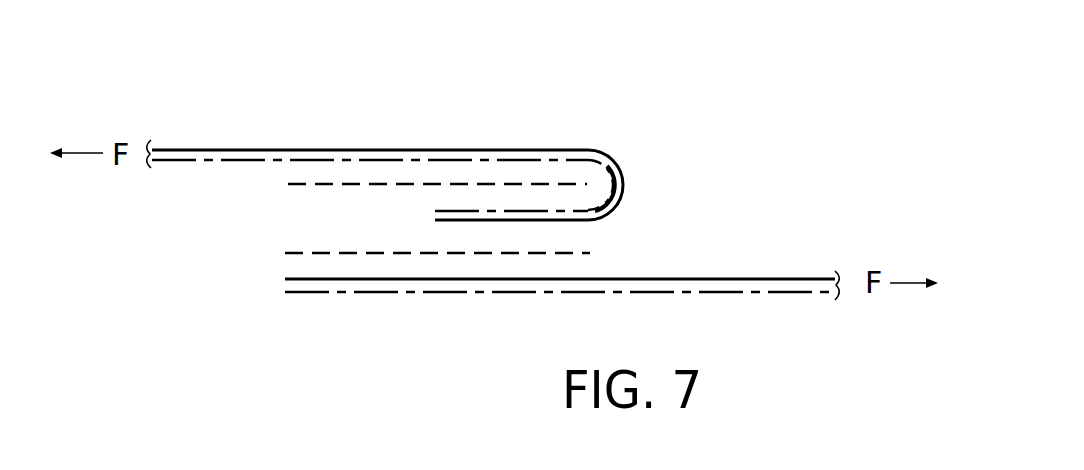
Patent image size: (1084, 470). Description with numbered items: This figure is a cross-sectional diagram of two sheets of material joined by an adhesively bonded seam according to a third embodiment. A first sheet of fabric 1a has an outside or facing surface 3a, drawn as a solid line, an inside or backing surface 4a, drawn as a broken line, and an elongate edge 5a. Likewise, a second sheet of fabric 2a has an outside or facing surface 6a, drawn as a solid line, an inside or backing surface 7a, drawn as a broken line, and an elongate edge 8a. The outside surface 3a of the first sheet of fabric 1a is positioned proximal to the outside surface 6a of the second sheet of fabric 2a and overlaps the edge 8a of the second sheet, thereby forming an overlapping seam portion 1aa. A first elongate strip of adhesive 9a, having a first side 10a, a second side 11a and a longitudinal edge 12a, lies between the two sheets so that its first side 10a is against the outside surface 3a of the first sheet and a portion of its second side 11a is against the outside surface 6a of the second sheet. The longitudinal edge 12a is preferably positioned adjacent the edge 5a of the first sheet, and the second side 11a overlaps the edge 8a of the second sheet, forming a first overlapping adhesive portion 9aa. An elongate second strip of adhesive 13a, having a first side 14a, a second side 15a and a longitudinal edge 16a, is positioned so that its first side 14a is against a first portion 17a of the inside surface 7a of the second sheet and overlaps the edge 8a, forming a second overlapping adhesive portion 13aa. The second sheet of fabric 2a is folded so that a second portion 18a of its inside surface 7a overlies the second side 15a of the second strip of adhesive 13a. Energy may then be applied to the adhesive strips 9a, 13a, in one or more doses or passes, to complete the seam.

The first sheet of fabric 1a is at (774, 329).
The overlapping seam portion 1aa is at (342, 298).
The second sheet of fabric 2a is at (218, 133).
The outside surface 3a is at (633, 272).
The inside surface 4a is at (727, 300).
The elongate edge 5a is at (298, 258).
The outside surface 6a is at (284, 148).
The inside surface 7a is at (230, 165).
The elongate edge 8a is at (428, 222).
The first elongate strip of adhesive 9a is at (582, 243).
The first overlapping adhesive portion 9aa is at (283, 288).
The first side 10a is at (575, 258).
The second side 11a is at (538, 243).
The longitudinal edge 12a is at (280, 252).
The second strip of adhesive 13a is at (583, 180).
The second overlapping adhesive portion 13aa is at (338, 170).
The first side 14a is at (463, 190).
The second side 15a is at (415, 181).
The longitudinal edge 16a is at (277, 185).
The first portion 17a is at (580, 200).
The second portion 18a is at (527, 167).